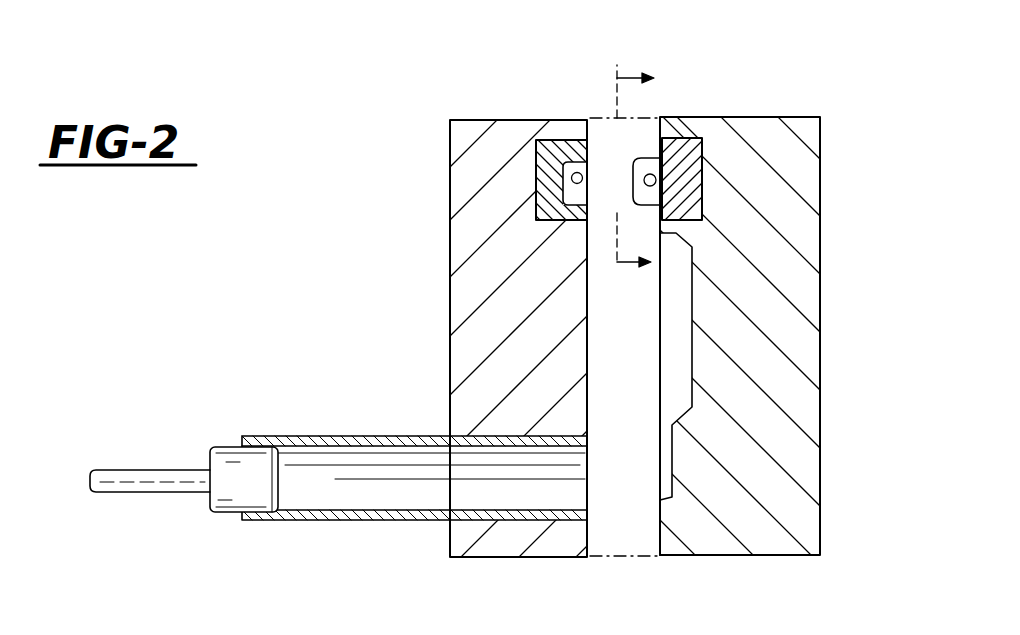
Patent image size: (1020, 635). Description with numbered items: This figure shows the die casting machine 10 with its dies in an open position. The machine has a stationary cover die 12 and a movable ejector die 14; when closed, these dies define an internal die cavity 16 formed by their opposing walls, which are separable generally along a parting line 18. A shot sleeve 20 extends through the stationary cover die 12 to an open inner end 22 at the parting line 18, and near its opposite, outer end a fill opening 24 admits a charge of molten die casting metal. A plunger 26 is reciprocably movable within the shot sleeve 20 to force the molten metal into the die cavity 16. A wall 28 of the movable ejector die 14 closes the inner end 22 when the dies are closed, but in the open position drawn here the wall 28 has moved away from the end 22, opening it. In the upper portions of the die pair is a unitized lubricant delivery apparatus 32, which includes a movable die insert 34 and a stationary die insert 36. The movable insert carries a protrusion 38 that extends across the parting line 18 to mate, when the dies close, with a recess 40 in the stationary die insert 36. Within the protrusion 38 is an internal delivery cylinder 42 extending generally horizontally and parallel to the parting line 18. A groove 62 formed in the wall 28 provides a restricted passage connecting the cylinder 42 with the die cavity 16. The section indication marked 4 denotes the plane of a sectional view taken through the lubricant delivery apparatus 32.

The die casting machine 10 is at (298, 303).
The stationary cover die 12 is at (450, 190).
The movable ejector die 14 is at (822, 333).
The die cavity 16 is at (686, 342).
The parting line 18 is at (588, 306).
The shot sleeve 20 is at (357, 520).
The open inner end 22 is at (588, 483).
The fill opening 24 is at (318, 438).
The plunger 26 is at (232, 497).
The wall 28 is at (660, 526).
The unitized lubricant delivery apparatus 32 is at (672, 133).
The movable die insert 34 is at (698, 118).
The stationary die insert 36 is at (560, 138).
The protrusion 38 is at (645, 203).
The recess 40 is at (560, 214).
The internal delivery cylinder 42 is at (656, 180).
The groove 62 is at (562, 175).
The section line 4- 4 is at (625, 299).